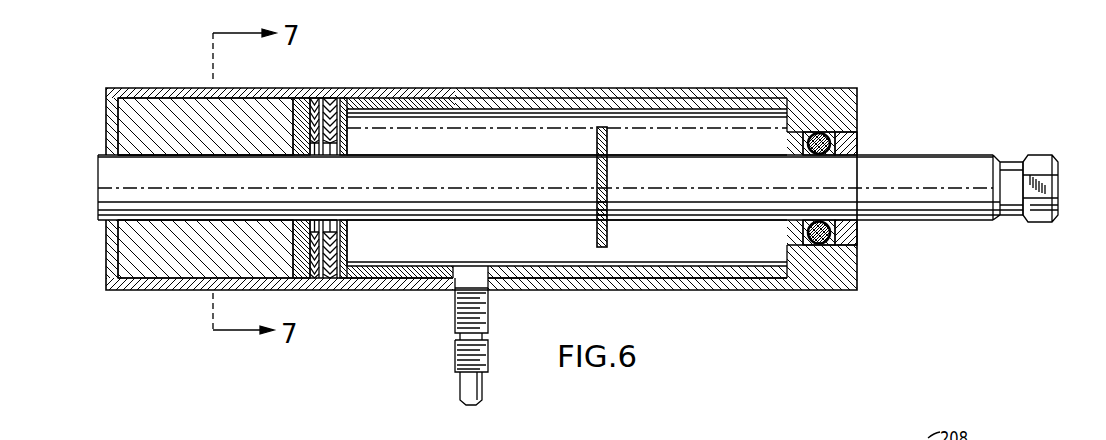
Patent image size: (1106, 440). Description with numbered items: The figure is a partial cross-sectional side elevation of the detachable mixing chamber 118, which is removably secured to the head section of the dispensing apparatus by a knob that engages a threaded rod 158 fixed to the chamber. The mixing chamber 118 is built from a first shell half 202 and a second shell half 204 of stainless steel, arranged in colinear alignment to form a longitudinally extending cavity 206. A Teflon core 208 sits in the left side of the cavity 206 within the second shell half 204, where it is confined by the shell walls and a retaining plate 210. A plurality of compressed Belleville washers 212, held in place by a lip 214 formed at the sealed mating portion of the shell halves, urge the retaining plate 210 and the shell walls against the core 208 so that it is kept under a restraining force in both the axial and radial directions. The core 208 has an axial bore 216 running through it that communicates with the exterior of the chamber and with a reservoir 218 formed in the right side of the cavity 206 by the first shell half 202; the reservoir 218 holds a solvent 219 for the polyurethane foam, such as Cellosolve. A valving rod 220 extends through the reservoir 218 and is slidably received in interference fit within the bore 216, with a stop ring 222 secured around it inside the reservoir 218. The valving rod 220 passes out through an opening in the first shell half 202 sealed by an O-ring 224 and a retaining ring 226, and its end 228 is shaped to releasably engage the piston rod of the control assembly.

The mixing chamber 118 is at (744, 88).
The threaded rod 158 is at (487, 355).
The first shell half 202 is at (513, 102).
The second shell half 204 is at (330, 97).
The cavity 206 is at (399, 272).
The core 208 is at (163, 265).
The retaining plate 210 is at (307, 97).
The Belleville washers 212 is at (333, 279).
The lip 214 is at (352, 100).
The axial bore 216 is at (171, 160).
The reservoir 218 is at (717, 256).
The solvent 219 is at (502, 253).
The valving rod 220 is at (903, 175).
The stop ring 222 is at (607, 244).
The O-ring 224 is at (808, 230).
The retaining ring 226 is at (858, 229).
The end of valving rod 228 is at (1040, 160).